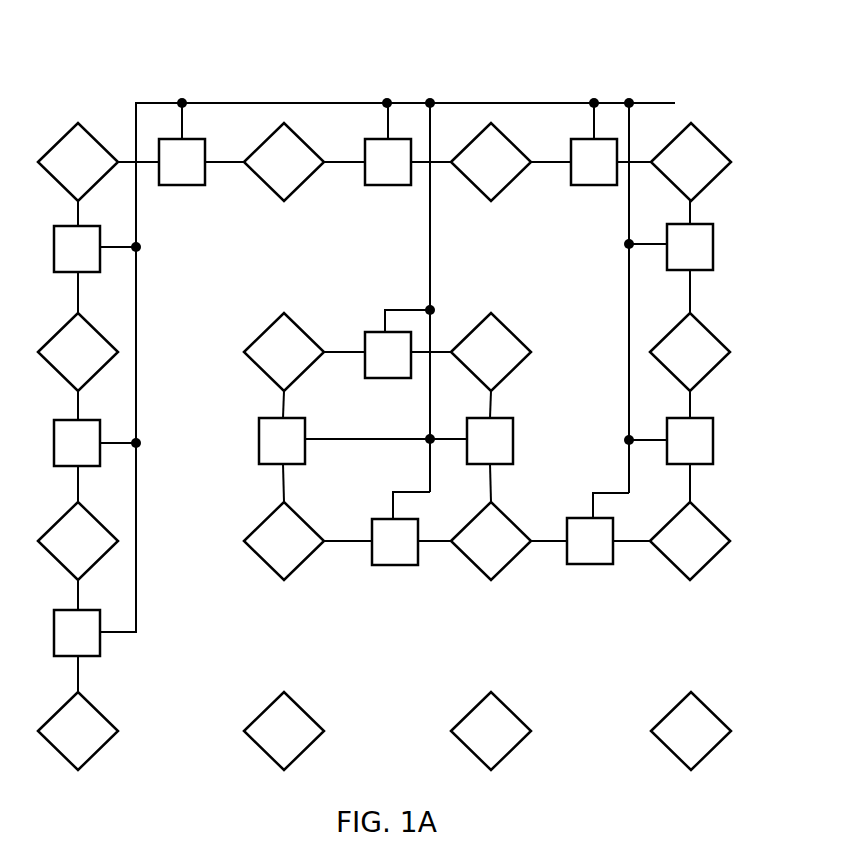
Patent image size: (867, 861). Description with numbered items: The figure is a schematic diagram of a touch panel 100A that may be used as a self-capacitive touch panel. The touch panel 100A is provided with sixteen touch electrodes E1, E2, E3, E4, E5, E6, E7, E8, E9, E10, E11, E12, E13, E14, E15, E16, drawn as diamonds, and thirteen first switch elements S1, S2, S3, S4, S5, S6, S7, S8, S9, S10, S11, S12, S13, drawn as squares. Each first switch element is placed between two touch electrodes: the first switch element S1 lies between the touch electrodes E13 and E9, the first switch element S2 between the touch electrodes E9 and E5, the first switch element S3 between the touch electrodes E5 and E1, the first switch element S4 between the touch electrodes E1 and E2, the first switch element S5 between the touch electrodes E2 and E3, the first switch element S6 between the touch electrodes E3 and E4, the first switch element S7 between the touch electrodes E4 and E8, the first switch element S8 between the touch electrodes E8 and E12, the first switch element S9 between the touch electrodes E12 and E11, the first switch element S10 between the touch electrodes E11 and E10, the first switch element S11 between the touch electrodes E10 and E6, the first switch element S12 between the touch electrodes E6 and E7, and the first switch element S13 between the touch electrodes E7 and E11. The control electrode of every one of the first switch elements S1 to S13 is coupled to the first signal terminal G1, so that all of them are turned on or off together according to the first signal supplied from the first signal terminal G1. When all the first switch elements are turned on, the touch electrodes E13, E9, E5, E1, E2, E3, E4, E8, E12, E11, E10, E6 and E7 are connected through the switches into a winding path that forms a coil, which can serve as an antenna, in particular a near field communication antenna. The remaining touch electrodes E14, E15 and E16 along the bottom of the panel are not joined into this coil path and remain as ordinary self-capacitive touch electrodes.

The touch panel 100A is at (102, 71).
The first signal terminal G1 is at (405, 361).
The touch electrode E1 is at (78, 162).
The touch electrode E2 is at (284, 162).
The touch electrode E3 is at (491, 162).
The touch electrode E4 is at (691, 162).
The touch electrode E5 is at (78, 352).
The touch electrode E6 is at (284, 352).
The touch electrode E7 is at (491, 352).
The touch electrode E8 is at (690, 352).
The touch electrode E9 is at (78, 541).
The touch electrode E10 is at (284, 541).
The touch electrode E11 is at (491, 541).
The touch electrode E12 is at (690, 541).
The touch electrode E13 is at (78, 731).
The touch electrode E14 is at (284, 731).
The touch electrode E15 is at (491, 731).
The touch electrode E16 is at (691, 731).
The first switch element S1 is at (77, 633).
The first switch element S2 is at (77, 443).
The first switch element S3 is at (77, 249).
The first switch element S4 is at (182, 162).
The first switch element S5 is at (388, 162).
The first switch element S6 is at (594, 162).
The first switch element S7 is at (690, 247).
The first switch element S8 is at (690, 441).
The first switch element S9 is at (590, 541).
The first switch element S10 is at (395, 542).
The first switch element S11 is at (282, 441).
The first switch element S12 is at (388, 355).
The first switch element S13 is at (490, 441).